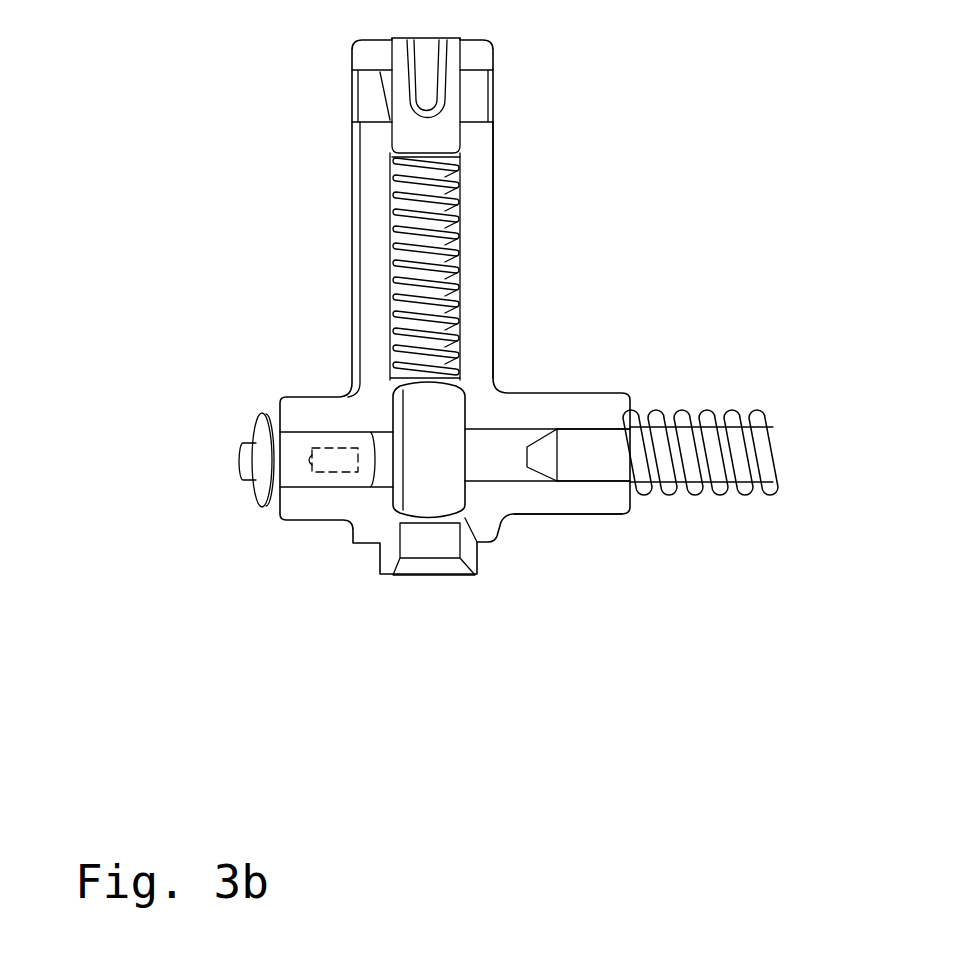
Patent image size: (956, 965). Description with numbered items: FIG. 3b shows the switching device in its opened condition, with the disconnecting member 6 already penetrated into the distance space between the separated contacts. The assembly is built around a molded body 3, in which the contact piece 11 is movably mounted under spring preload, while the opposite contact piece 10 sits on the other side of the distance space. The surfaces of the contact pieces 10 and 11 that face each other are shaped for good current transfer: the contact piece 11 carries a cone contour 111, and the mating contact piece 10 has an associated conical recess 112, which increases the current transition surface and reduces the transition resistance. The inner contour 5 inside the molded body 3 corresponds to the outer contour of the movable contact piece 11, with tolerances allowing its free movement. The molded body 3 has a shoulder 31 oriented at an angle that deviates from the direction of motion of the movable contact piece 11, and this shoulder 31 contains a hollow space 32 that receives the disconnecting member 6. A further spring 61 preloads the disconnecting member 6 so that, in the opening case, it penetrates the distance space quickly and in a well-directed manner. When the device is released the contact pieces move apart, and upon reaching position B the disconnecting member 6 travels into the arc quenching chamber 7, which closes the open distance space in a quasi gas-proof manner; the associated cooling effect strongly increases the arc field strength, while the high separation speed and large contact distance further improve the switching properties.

The molded body 3 is at (530, 168).
The shoulder 31 is at (473, 273).
The hollow space 32 is at (402, 246).
The further spring 61 is at (392, 200).
The disconnecting member 6 is at (423, 503).
The position B is at (463, 518).
The conical recess 112 is at (358, 468).
The contact piece 10 is at (293, 467).
The arc quenching chamber 7 is at (512, 437).
The inner contour 5 is at (507, 475).
The cone contour 111 is at (550, 460).
The contact piece 11 is at (731, 467).